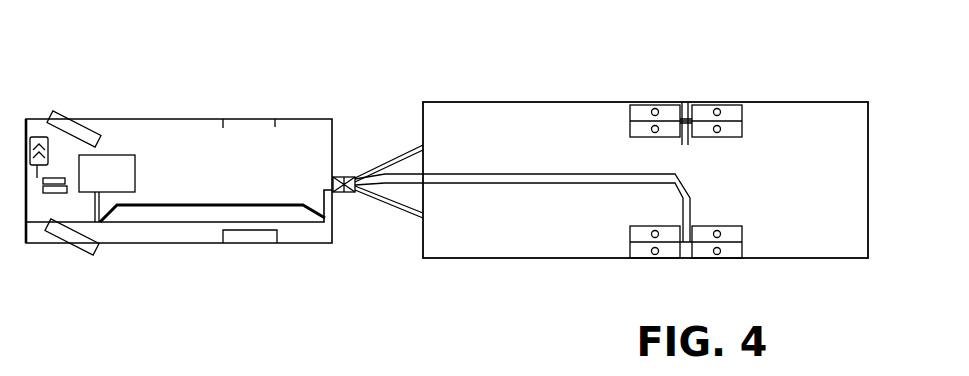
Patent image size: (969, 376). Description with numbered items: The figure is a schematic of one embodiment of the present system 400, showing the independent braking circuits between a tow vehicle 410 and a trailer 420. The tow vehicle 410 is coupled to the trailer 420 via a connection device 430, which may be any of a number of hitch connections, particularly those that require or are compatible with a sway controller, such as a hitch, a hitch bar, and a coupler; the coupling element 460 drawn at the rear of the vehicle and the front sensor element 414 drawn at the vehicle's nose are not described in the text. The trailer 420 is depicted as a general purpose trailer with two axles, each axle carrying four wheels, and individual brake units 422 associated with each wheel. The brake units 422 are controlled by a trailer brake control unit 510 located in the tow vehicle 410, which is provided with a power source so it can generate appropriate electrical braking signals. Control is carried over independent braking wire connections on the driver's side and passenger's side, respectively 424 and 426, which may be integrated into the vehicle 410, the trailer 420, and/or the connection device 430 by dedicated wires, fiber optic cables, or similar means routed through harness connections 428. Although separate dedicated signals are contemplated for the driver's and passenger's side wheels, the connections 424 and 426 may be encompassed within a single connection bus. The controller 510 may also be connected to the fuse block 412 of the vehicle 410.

The system 400 is at (748, 35).
The tow vehicle 410 is at (280, 186).
The fuse block 412 is at (33, 178).
The front sensor unit 414 is at (38, 137).
The trailer 420 is at (502, 159).
The brake units 422 is at (717, 250).
The driver's side braking wire connection 424 is at (482, 185).
The passenger's side braking wire connection 426 is at (462, 172).
The harness connections 428 is at (192, 207).
The connection device 430 is at (371, 212).
The hitch coupler 460 is at (343, 177).
The trailer brake control unit 510 is at (90, 187).